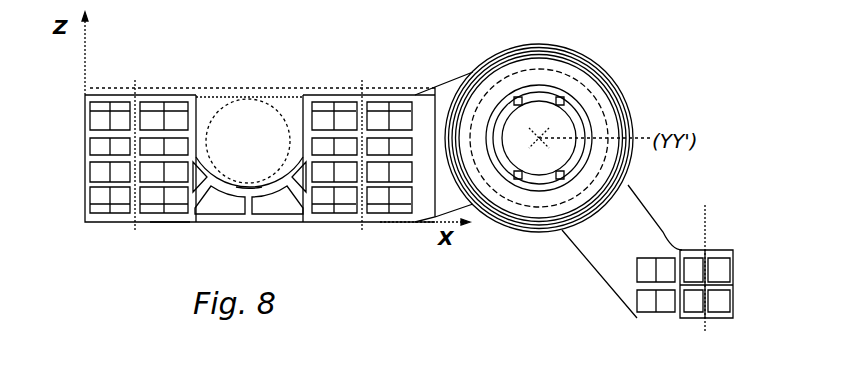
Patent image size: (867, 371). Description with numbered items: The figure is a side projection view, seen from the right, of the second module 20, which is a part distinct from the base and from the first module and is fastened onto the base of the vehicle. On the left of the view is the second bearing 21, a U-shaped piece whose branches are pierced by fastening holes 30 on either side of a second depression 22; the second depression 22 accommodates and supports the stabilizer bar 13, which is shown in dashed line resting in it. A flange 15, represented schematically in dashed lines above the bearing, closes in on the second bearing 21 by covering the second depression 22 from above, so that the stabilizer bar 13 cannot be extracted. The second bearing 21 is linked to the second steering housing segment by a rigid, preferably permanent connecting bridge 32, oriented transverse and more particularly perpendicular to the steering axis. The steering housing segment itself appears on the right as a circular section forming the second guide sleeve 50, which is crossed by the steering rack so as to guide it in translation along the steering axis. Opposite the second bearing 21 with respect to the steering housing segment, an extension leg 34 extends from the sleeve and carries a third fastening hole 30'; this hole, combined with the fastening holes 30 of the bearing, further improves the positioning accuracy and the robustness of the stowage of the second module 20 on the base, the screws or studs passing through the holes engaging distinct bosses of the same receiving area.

The fastening hole 30 is at (251, 128).
The flange 15 is at (201, 92).
The stabilizer bar 13 is at (264, 96).
The connecting bridge 32 is at (412, 92).
The second module 20 is at (547, 38).
The second guide sleeve 50 is at (590, 97).
The extension leg 34 is at (626, 302).
The third fastening hole 30' is at (701, 266).
The second bearing 21 is at (168, 224).
The second depression 22 is at (267, 189).